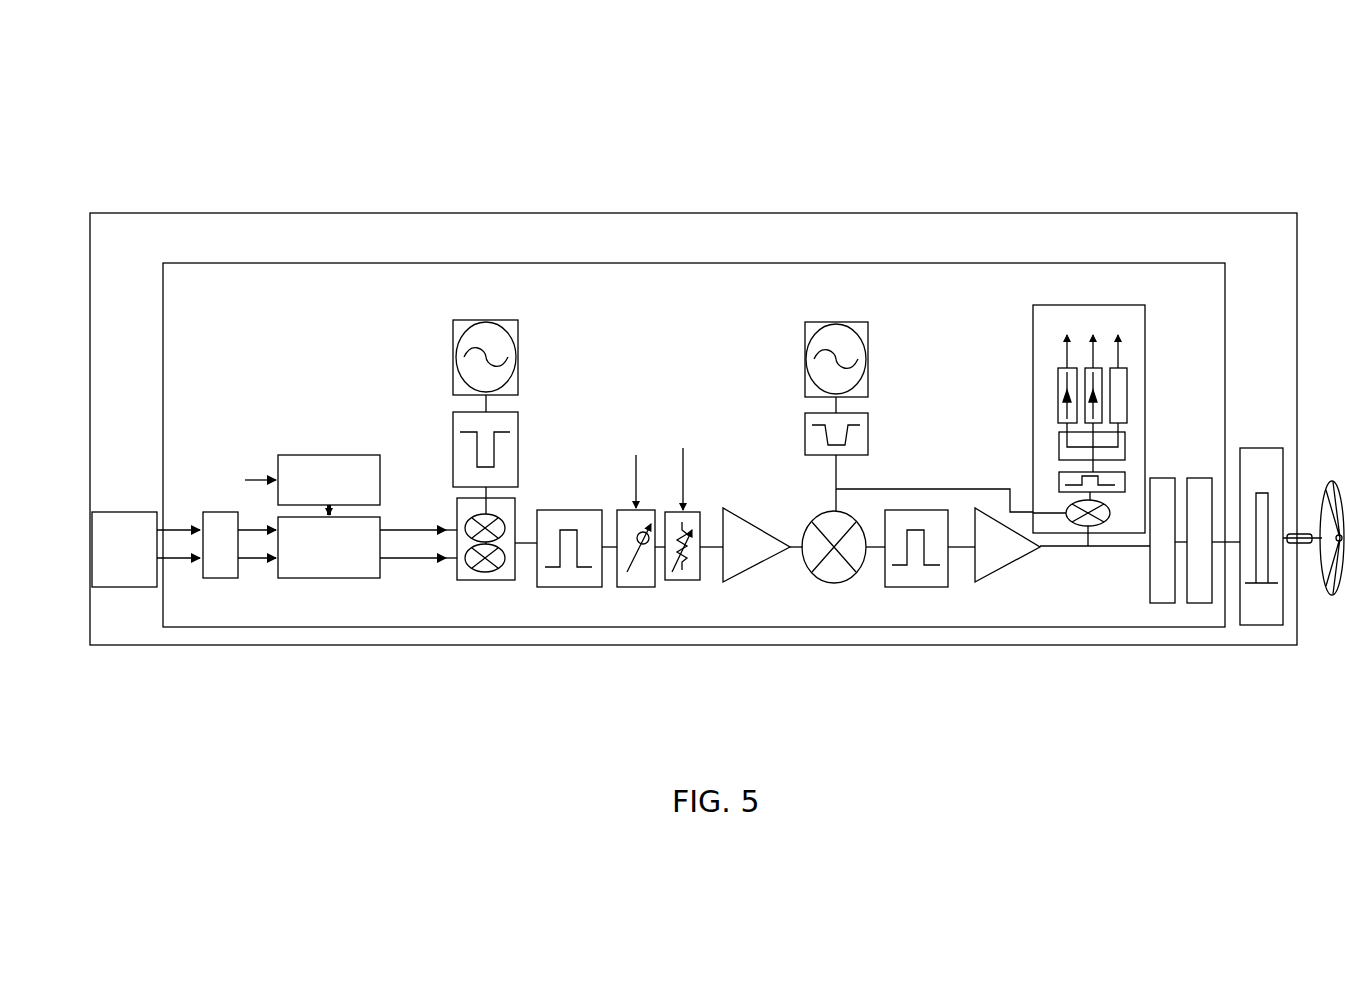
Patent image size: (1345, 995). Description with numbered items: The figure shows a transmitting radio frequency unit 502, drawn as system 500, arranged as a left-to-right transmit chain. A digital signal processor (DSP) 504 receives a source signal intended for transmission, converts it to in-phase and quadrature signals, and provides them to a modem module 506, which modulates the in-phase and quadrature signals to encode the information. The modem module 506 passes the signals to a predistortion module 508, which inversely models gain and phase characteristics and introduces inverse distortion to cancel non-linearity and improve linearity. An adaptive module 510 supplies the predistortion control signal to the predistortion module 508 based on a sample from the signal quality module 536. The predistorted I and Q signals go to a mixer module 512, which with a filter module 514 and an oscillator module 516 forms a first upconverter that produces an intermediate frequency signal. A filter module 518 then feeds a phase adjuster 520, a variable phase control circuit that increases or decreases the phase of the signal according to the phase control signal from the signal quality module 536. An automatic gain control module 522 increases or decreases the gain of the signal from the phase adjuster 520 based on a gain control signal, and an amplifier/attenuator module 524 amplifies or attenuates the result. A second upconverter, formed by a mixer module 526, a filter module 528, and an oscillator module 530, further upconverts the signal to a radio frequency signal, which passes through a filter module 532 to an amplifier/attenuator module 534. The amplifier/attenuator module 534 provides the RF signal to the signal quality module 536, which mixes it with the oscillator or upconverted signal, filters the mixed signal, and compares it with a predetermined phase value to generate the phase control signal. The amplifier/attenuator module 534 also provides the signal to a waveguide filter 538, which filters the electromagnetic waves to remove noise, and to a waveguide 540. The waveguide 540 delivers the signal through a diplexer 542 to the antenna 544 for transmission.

The transmitter system 500 is at (136, 140).
The transmitting radio frequency unit 502 is at (505, 263).
The digital signal processor (DSP) 504 is at (122, 587).
The modem module 506 is at (225, 578).
The predistortion module 508 is at (335, 578).
The adaptive module 510 is at (380, 490).
The mixer module 512 is at (491, 580).
The filter module 514 is at (518, 475).
The oscillator module 516 is at (518, 380).
The filter module 518 is at (570, 587).
The phase adjuster 520 is at (637, 587).
The automatic gain control (AGC) module 522 is at (680, 580).
The amplifier/attenuator module 524 is at (737, 582).
The mixer module 526 is at (834, 583).
The filter module 528 is at (868, 440).
The oscillator module 530 is at (868, 380).
The filter module 532 is at (917, 587).
The amplifier/attenuator module 534 is at (977, 582).
The signal quality module 536 is at (1145, 318).
The waveguide filter 538 is at (1160, 603).
The waveguide 540 is at (1205, 603).
The diplexer 542 is at (1262, 455).
The antenna 544 is at (1330, 490).